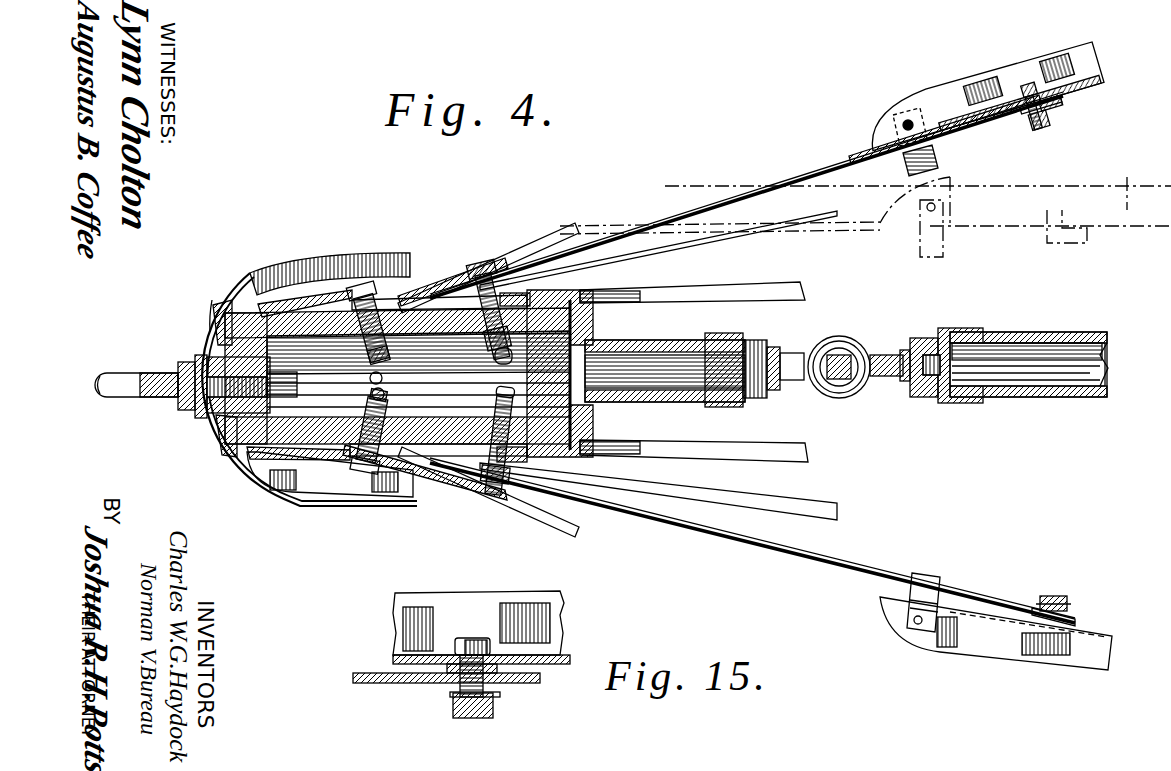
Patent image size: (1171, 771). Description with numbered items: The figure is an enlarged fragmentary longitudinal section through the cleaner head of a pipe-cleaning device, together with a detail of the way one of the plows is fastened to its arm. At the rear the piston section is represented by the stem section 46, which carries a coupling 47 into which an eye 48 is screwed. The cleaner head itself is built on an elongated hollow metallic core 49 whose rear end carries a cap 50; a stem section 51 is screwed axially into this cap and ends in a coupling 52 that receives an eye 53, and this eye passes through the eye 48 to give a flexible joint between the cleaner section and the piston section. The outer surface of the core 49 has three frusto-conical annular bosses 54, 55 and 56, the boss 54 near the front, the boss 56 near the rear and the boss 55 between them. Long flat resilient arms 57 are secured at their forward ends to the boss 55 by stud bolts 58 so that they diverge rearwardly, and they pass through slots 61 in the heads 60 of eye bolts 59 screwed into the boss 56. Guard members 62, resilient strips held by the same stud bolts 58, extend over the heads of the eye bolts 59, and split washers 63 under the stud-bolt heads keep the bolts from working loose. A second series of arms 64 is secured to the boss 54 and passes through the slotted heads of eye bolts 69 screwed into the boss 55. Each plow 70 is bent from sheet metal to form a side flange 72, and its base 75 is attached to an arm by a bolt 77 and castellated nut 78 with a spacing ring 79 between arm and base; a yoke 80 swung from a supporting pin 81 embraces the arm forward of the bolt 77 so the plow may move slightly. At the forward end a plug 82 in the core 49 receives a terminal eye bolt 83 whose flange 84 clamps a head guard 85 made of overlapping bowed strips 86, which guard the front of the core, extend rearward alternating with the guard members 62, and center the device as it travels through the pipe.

In FIG. 4, the stem section 46 is at (1028, 332).
In FIG. 4, the coupling 47 is at (962, 330).
In FIG. 4, the eye 48 is at (890, 355).
In FIG. 4, the hollow metallic core 49 is at (447, 418).
In FIG. 4, the cap 50 is at (596, 452).
In FIG. 4, the stem section 51 is at (665, 340).
In FIG. 4, the coupling 52 is at (750, 334).
In FIG. 4, the eye 53 is at (800, 360).
In FIG. 4, the annular boss 54 is at (260, 310).
In FIG. 4, the annular boss 55 is at (425, 310).
In FIG. 4, the annular boss 56 is at (516, 308).
In FIG. 4, the flexible resilient arms 57 is at (660, 222).
In FIG. 15, the flexible resilient arms 57 is at (405, 684).
In FIG. 4, the stud bolts 58 is at (367, 362).
In FIG. 4, the eye bolts 59 is at (511, 364).
In FIG. 4, the heads 60 is at (473, 268).
In FIG. 4, the slots 61 is at (465, 283).
In FIG. 4, the guard members 62 is at (546, 236).
In FIG. 4, the split washers 63 is at (368, 472).
In FIG. 4, the arms 64 is at (665, 250).
In FIG. 4, the eye bolts 69 is at (384, 387).
In FIG. 4, the plow 70 is at (982, 655).
In FIG. 4, the side flange 72 is at (978, 86).
In FIG. 15, the side flange 72 is at (463, 598).
In FIG. 4, the base 75 is at (1108, 80).
In FIG. 15, the base 75 is at (570, 657).
In FIG. 4, the bolt 77 is at (1032, 84).
In FIG. 15, the bolt 77 is at (486, 645).
In FIG. 4, the castellated nut 78 is at (1053, 126).
In FIG. 15, the castellated nut 78 is at (480, 710).
In FIG. 4, the spacing ring 79 is at (1064, 104).
In FIG. 15, the spacing ring 79 is at (522, 684).
In FIG. 4, the yoke 80 is at (936, 168).
In FIG. 4, the supporting pin 81 is at (903, 121).
In FIG. 4, the plug 82 is at (208, 406).
In FIG. 4, the terminal eye bolt 83 is at (132, 398).
In FIG. 4, the flange 84 is at (180, 366).
In FIG. 4, the head guard 85 is at (207, 317).
In FIG. 4, the bowed strips 86 is at (272, 262).